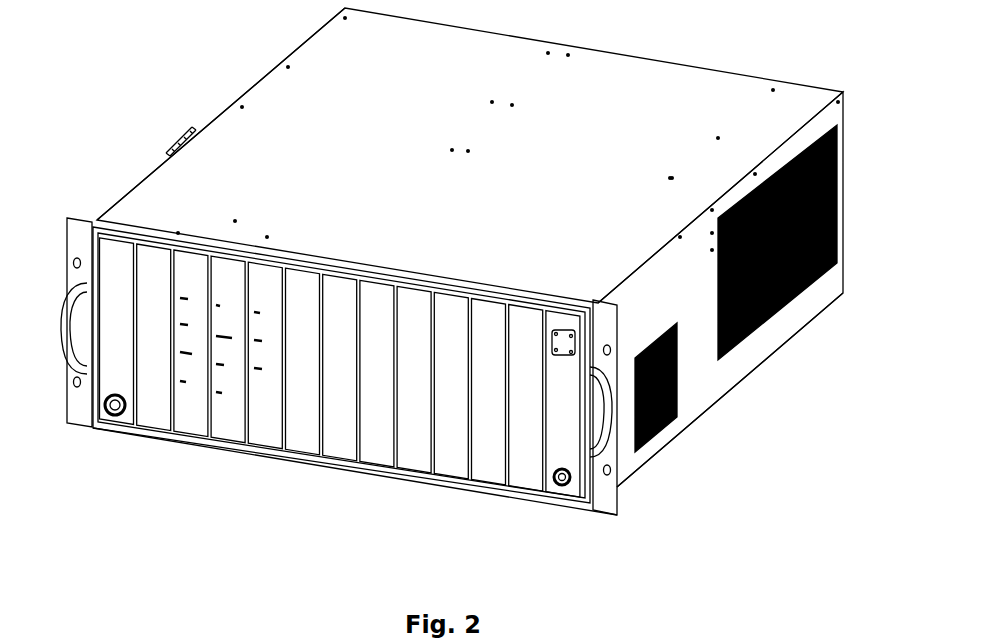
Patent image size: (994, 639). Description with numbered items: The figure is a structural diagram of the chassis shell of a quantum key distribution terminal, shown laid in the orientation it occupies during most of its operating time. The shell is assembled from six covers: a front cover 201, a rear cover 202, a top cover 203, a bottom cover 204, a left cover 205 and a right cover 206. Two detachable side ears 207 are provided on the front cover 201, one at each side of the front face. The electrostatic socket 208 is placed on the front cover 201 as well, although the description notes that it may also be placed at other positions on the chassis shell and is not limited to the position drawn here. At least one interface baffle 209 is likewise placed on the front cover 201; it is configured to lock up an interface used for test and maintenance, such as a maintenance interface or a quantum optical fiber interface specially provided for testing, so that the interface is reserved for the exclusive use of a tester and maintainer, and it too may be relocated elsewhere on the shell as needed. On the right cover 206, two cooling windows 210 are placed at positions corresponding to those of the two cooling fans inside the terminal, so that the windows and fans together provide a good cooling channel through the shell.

The front cover 201 is at (393, 428).
The rear cover 202 is at (583, 48).
The top cover 203 is at (283, 132).
The bottom cover 204 is at (671, 443).
The left cover 205 is at (252, 88).
The right cover 206 is at (700, 375).
The side ears 207 is at (597, 503).
The electrostatic socket 208 is at (570, 481).
The interface baffle 209 is at (112, 405).
The cooling windows 210 is at (782, 310).